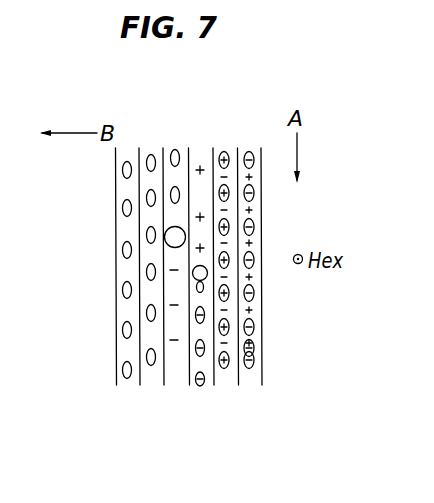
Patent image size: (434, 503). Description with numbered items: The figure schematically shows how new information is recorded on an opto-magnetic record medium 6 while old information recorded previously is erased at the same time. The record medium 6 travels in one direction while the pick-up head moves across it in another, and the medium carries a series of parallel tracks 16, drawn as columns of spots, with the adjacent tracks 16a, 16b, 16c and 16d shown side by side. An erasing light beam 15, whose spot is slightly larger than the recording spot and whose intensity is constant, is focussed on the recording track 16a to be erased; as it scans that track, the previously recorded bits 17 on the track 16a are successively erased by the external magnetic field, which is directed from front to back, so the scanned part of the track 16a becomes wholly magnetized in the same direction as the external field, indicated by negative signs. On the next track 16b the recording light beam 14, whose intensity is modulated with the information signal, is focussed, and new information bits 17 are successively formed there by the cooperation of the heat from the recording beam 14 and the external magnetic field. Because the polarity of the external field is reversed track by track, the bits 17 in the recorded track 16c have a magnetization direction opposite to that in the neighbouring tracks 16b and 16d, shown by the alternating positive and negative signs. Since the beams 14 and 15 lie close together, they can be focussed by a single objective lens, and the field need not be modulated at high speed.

The record medium 6 is at (95, 346).
The recording light beam 14 is at (202, 266).
The erasing light beam 15 is at (185, 229).
The tracks 16 is at (173, 145).
The recording track to be erased 16a is at (178, 384).
The next track 16b is at (208, 390).
The recorded track 16c is at (227, 378).
The adjacent track 16d is at (253, 378).
The bits 17 is at (124, 258).